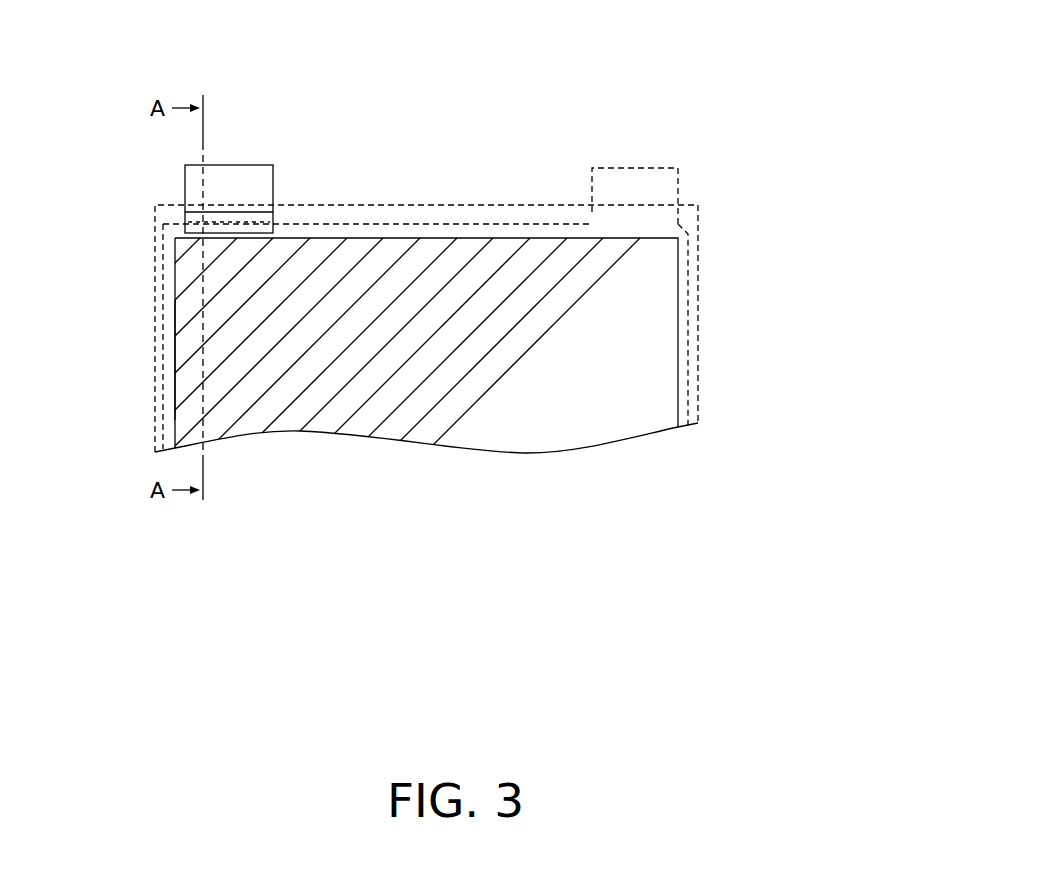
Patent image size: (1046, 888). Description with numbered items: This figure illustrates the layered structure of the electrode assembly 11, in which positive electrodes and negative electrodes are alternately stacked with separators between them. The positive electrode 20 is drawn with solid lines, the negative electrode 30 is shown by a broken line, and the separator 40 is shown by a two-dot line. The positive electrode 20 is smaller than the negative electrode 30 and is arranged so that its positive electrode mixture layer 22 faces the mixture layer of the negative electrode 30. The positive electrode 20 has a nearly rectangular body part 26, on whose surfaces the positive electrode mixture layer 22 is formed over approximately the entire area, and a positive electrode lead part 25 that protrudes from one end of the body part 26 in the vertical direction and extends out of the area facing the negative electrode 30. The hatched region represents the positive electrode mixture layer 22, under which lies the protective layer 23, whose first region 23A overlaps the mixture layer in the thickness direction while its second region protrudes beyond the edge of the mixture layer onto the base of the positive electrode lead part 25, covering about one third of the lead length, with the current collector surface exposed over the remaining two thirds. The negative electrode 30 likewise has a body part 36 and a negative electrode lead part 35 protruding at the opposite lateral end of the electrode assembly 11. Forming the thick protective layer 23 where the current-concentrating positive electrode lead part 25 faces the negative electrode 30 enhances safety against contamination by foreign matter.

The electrode assembly 11 is at (702, 63).
The positive electrode 20 is at (409, 238).
The positive electrode mixture layer 22 is at (333, 434).
The protective layer 23 is at (250, 212).
The first region 23A is at (423, 436).
The positive electrode lead part 25 is at (247, 178).
The body part 26 is at (175, 301).
The negative electrode 30 is at (487, 222).
The negative electrode lead part 35 is at (636, 168).
The body part 36 is at (700, 295).
The separator 40 is at (703, 208).